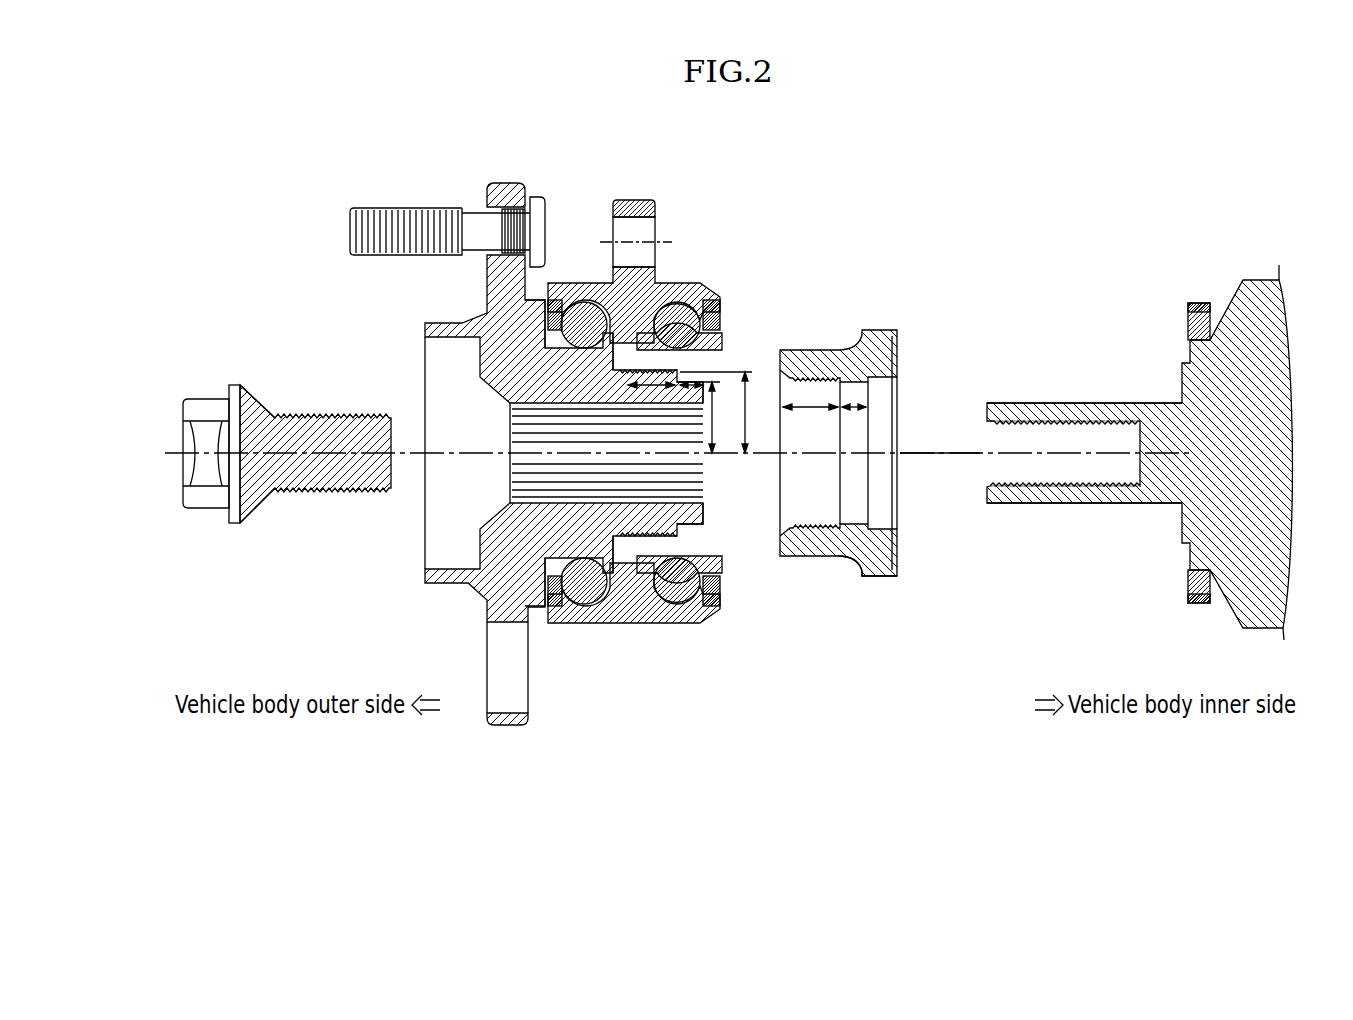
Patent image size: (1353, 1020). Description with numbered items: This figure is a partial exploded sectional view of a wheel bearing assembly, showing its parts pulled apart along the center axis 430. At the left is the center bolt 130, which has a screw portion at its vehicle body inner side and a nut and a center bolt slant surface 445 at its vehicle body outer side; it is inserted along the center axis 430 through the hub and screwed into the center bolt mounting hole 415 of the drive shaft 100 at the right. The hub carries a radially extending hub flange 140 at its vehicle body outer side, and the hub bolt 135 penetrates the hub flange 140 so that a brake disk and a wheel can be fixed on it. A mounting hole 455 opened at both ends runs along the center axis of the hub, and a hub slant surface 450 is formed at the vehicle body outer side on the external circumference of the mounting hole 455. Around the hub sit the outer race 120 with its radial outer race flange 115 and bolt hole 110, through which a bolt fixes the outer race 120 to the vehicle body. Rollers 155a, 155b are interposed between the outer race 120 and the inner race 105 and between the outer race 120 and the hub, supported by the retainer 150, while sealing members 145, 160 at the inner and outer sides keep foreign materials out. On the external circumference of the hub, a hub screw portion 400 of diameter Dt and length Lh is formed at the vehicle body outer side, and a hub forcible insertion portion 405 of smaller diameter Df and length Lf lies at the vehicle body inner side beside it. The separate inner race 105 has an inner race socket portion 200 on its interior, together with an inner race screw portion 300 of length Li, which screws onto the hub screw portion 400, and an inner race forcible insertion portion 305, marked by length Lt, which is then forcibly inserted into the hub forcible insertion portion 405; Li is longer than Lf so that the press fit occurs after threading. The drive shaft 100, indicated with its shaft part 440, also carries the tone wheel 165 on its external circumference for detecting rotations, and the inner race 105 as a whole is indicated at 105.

The drive shaft 100 is at (1139, 464).
The inner race 105 is at (841, 576).
The bolt hole 110 is at (634, 384).
The outer race flange 115 is at (633, 205).
The outer race 120 is at (578, 536).
The center bolt 130 is at (287, 458).
The hub bolt 135 is at (447, 198).
The hub flange 140 is at (507, 192).
The sealing member 145 is at (540, 312).
The retainer 150 is at (668, 318).
The roller 155a is at (712, 296).
The roller 155b is at (556, 310).
The sealing member 160 is at (724, 334).
The tone wheel 165 is at (1200, 603).
The inner race socket portion 200 is at (877, 494).
The inner race screw portion 300 is at (812, 384).
The inner race forcible insertion portion 305 is at (856, 381).
The hub screw portion 400 is at (650, 358).
The hub forcible insertion portion 405 is at (650, 373).
The center bolt mounting hole 415 is at (1053, 478).
The center axis 430 is at (940, 458).
The shaft portion 440 is at (1061, 402).
The center bolt slant surface 445 is at (262, 503).
The hub slant surface 450 is at (561, 454).
The mounting hole 455 is at (670, 486).
The diameter of hub forcible insertion portion Df is at (722, 417).
The diameter of hub screw portion Dt is at (726, 412).
The length of hub screw portion Lh is at (665, 390).
The length of hub forcible insertion portion Lf is at (692, 388).
The length of inner race screw portion Li is at (810, 428).
The step length Lt is at (854, 428).